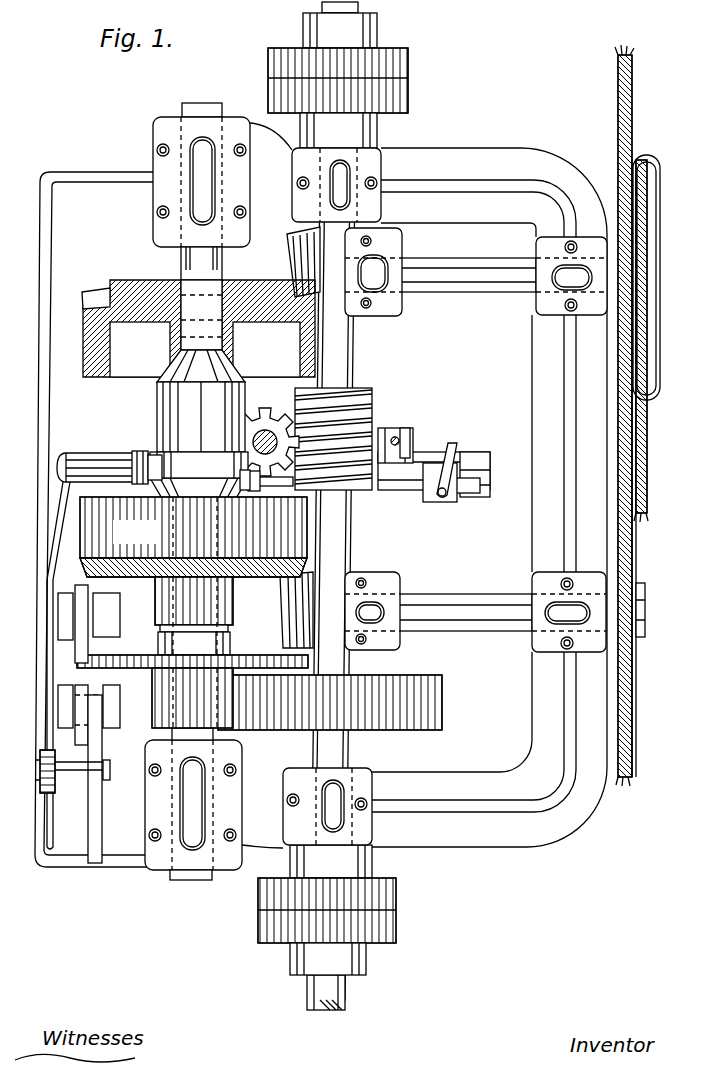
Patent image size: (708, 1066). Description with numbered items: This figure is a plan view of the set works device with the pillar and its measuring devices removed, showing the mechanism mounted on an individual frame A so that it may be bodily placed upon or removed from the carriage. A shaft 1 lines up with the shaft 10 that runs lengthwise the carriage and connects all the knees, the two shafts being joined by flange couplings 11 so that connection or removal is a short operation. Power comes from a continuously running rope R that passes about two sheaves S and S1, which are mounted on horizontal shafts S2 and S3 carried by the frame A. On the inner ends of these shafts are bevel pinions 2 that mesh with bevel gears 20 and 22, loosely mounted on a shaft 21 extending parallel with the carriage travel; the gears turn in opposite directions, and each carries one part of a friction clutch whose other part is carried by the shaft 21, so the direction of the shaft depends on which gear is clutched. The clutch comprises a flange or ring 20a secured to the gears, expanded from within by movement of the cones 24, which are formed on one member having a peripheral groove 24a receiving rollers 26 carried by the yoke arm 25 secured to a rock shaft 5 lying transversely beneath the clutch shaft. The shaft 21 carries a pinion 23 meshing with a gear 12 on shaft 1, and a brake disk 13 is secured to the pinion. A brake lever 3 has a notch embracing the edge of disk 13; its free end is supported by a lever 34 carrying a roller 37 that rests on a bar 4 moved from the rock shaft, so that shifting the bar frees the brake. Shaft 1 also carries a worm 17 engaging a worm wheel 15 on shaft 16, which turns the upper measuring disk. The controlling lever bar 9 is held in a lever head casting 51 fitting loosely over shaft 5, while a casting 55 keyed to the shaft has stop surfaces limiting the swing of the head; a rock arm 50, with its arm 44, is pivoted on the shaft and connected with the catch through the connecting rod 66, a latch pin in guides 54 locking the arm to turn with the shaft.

The shaft 1 is at (345, 547).
The bevel pinions 2 is at (287, 238).
The lever 3 is at (66, 645).
The bar 4 is at (50, 572).
The rock shaft 5 is at (88, 457).
The bar of lever 9 is at (490, 467).
The shaft 10 is at (358, 10).
The flange couplings 11 is at (408, 77).
The gear 12 is at (408, 722).
The brake disk 13 is at (134, 664).
The worm wheel 15 is at (263, 475).
The shaft 16 is at (265, 440).
The worm 17 is at (372, 404).
The bevel gear 20 is at (260, 572).
The flange or ring 20a is at (193, 537).
The shaft 21 is at (178, 897).
The bevel gear 22 is at (96, 298).
The pinion 23 is at (162, 710).
The cones 24 is at (162, 372).
The peripheral groove 24a is at (199, 465).
The yoke arm 25 is at (138, 453).
The rollers 26 is at (154, 455).
The lever 34 is at (93, 800).
The roller 37 is at (50, 776).
The arm 44 is at (433, 481).
The rock arm 50 is at (408, 441).
The lever head casting 51 is at (453, 446).
The guides 54 is at (483, 486).
The casting 55 is at (487, 452).
The connecting rod 66 is at (393, 433).
The frame A is at (78, 197).
The rope R is at (618, 97).
The sheave S is at (637, 714).
The sheave S1 is at (648, 308).
The horizontal shaft S2 is at (478, 602).
The horizontal shaft S3 is at (480, 280).